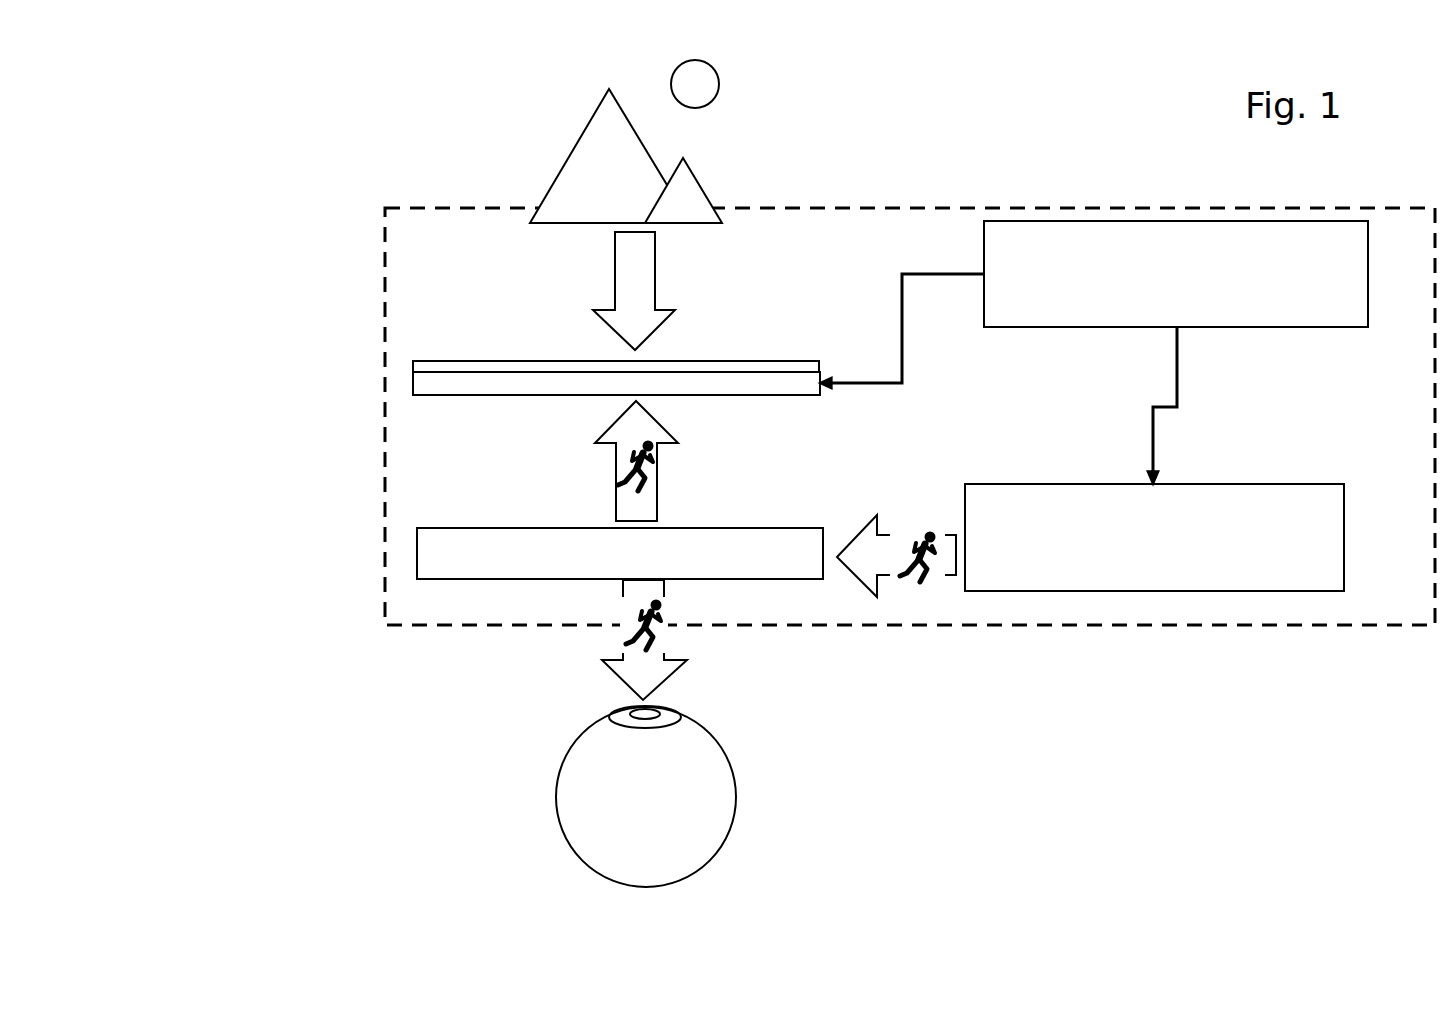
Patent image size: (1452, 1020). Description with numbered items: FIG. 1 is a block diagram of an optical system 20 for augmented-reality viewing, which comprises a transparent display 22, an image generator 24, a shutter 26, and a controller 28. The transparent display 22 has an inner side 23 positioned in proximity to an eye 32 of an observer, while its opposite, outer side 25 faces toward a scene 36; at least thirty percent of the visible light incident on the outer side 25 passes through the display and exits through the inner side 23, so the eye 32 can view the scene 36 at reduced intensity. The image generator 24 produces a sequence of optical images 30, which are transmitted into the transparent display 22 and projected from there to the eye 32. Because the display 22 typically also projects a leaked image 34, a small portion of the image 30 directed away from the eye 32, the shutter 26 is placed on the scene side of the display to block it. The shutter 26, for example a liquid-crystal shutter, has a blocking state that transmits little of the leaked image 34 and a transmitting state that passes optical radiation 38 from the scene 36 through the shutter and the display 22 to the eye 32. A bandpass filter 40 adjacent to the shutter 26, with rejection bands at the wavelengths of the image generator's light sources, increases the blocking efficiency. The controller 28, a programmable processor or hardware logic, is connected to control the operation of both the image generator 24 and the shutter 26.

The optical system 20 is at (385, 278).
The transparent display 22 is at (443, 558).
The inner side 23 is at (512, 582).
The image generator 24 is at (1218, 573).
The outer side 25 is at (518, 527).
The shutter 26 is at (445, 383).
The controller 28 is at (1233, 308).
The optical images 30 is at (670, 628).
The eye 32 is at (698, 788).
The leaked image 34 is at (663, 469).
The scene 36 is at (715, 137).
The optical radiation 38 is at (657, 282).
The bandpass filter 40 is at (458, 365).